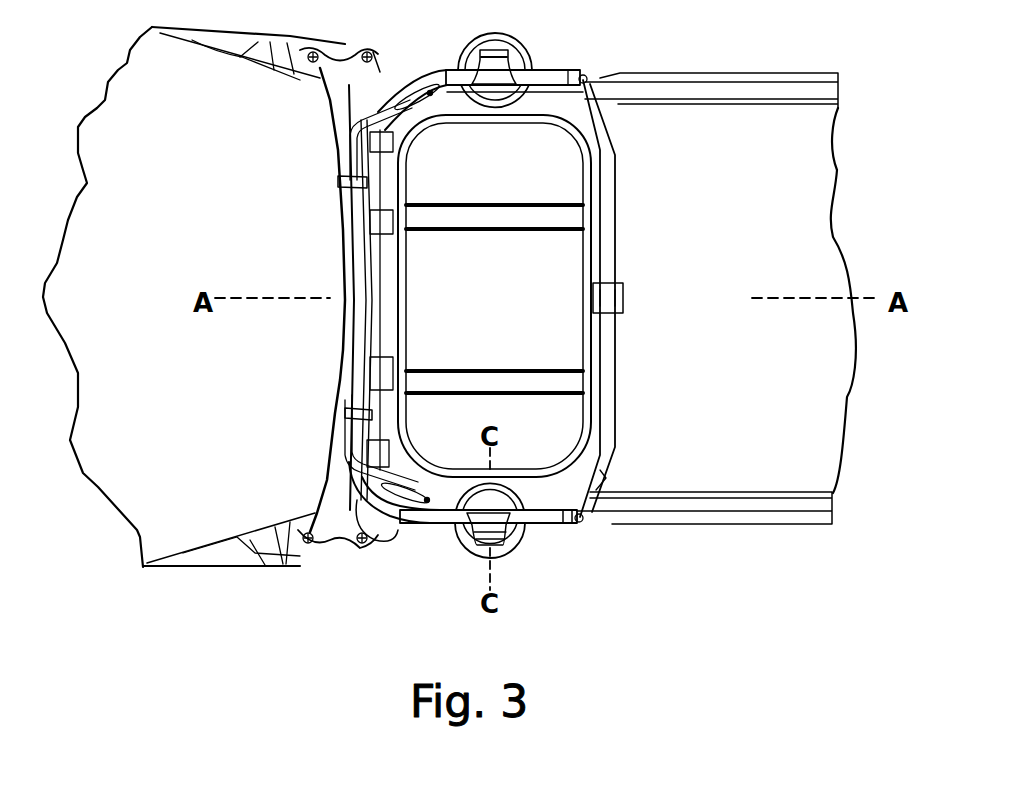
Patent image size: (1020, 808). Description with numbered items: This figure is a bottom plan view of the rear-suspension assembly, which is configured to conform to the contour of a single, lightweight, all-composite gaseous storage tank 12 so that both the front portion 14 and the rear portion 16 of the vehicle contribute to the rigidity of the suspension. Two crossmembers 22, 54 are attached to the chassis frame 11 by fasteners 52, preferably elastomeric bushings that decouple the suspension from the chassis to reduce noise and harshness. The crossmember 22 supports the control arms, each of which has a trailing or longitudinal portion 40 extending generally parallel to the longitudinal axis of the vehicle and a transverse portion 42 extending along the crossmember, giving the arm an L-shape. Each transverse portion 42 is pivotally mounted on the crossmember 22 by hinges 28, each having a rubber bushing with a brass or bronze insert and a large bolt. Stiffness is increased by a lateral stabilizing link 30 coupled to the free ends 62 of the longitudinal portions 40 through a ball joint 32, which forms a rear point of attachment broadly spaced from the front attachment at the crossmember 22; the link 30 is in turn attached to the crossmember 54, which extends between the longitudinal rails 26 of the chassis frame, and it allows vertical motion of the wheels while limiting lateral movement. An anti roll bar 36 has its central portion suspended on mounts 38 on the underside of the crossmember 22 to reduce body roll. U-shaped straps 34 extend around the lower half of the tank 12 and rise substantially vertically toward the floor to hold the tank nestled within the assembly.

The chassis frame 11 is at (221, 566).
The gaseous storage tank 12 is at (550, 276).
The front portion 14 is at (112, 286).
The rear portion 16 is at (802, 276).
The crossmember 22 is at (351, 106).
The longitudinal rails 26 is at (770, 98).
The hinge 28 is at (387, 448).
The lateral stabilizing link 30 is at (606, 473).
The ball joint 32 is at (586, 523).
The U-shaped straps 34 is at (497, 222).
The anti roll bar 36 is at (350, 368).
The mounts 38 is at (342, 182).
The longitudinal portion 40 is at (435, 528).
The transverse portion 42 is at (352, 421).
The fasteners 52 is at (362, 546).
The crossmember 54 is at (620, 381).
The free ends 62 is at (566, 526).